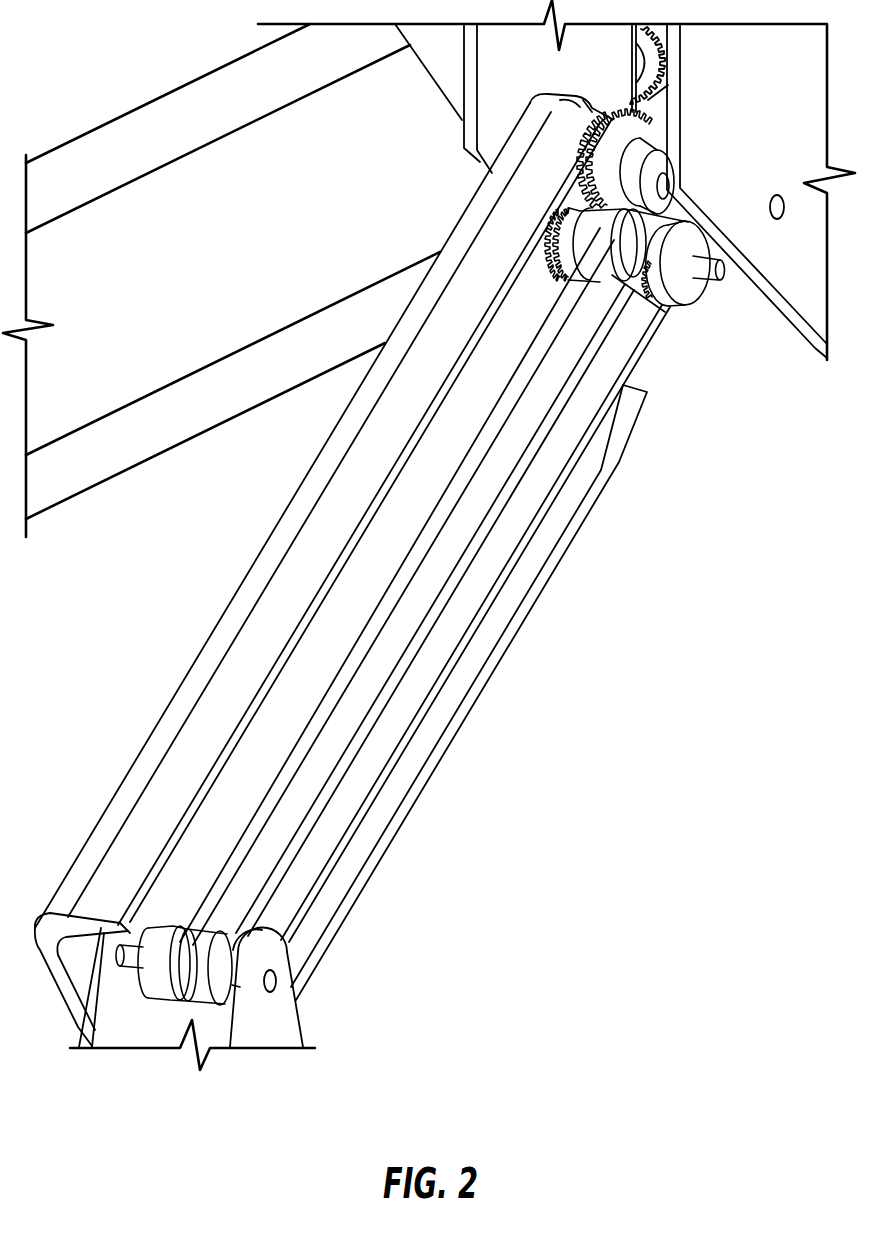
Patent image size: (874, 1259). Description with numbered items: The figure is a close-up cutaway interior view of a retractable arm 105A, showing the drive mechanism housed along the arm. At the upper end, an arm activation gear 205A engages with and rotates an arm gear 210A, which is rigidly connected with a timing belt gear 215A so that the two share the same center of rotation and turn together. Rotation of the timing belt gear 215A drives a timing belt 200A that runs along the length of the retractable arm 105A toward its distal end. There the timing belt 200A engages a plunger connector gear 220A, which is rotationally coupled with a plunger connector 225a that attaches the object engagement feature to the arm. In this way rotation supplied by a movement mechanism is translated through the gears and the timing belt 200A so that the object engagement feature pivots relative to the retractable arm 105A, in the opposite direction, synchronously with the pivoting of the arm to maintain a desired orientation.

The retractable arm 105A is at (220, 640).
The timing belt 200A is at (563, 450).
The arm activation gear 205A is at (597, 158).
The arm gear 210A is at (547, 243).
The timing belt gear 215A is at (657, 300).
The plunger connector gear 220A is at (250, 937).
The plunger connector 225a is at (293, 1022).